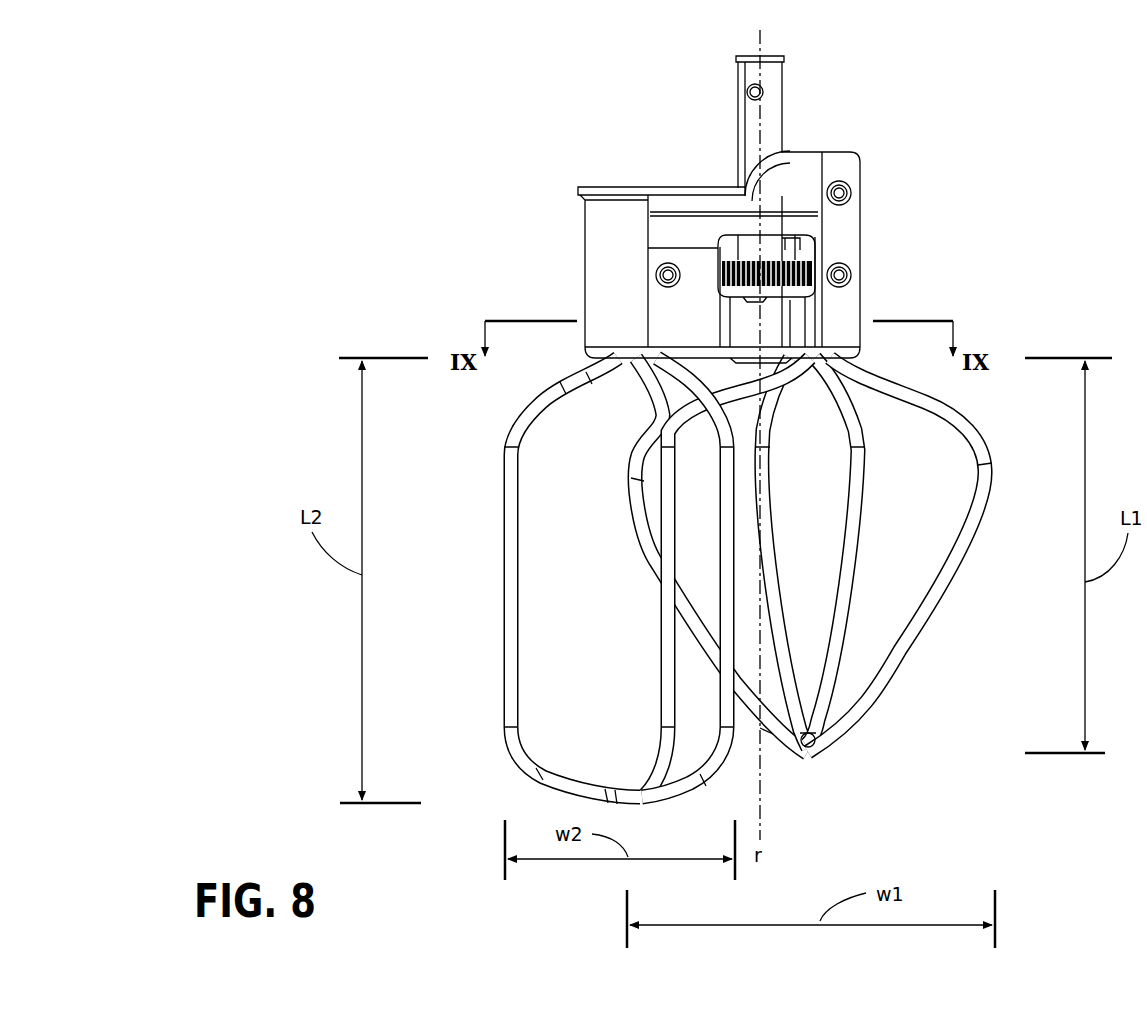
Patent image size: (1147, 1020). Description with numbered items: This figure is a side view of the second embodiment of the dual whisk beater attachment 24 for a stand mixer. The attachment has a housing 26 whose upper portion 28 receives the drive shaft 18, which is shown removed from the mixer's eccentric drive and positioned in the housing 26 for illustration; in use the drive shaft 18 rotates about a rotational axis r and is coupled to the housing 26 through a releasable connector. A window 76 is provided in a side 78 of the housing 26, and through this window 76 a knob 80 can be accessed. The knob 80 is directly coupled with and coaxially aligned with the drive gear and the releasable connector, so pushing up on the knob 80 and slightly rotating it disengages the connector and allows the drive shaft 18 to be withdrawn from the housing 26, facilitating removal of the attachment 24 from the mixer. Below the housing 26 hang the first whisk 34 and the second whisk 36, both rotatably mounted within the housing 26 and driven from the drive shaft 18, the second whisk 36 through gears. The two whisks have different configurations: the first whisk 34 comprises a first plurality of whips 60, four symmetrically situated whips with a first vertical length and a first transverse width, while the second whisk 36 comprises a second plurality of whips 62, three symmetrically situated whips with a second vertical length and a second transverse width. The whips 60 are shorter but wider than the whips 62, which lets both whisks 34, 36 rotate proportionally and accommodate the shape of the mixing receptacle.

The drive shaft 18 is at (773, 107).
The dual whisk beater attachment 24 is at (782, 209).
The housing 26 is at (853, 243).
The upper portion 28 is at (602, 233).
The first whisk 34 is at (980, 419).
The second whisk 36 is at (517, 407).
The first plurality of whips 60 is at (841, 555).
The second plurality of whips 62 is at (619, 581).
The window 76 is at (763, 247).
The side 78 is at (787, 312).
The knob 80 is at (720, 287).